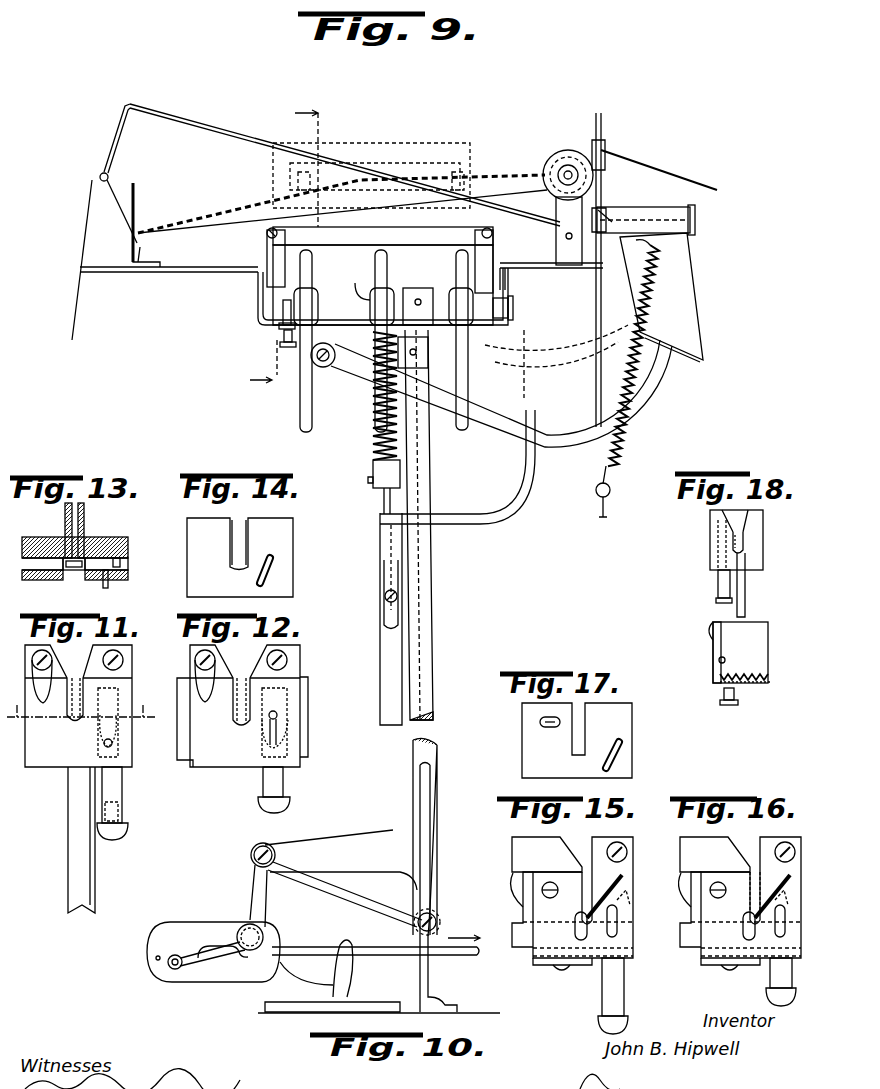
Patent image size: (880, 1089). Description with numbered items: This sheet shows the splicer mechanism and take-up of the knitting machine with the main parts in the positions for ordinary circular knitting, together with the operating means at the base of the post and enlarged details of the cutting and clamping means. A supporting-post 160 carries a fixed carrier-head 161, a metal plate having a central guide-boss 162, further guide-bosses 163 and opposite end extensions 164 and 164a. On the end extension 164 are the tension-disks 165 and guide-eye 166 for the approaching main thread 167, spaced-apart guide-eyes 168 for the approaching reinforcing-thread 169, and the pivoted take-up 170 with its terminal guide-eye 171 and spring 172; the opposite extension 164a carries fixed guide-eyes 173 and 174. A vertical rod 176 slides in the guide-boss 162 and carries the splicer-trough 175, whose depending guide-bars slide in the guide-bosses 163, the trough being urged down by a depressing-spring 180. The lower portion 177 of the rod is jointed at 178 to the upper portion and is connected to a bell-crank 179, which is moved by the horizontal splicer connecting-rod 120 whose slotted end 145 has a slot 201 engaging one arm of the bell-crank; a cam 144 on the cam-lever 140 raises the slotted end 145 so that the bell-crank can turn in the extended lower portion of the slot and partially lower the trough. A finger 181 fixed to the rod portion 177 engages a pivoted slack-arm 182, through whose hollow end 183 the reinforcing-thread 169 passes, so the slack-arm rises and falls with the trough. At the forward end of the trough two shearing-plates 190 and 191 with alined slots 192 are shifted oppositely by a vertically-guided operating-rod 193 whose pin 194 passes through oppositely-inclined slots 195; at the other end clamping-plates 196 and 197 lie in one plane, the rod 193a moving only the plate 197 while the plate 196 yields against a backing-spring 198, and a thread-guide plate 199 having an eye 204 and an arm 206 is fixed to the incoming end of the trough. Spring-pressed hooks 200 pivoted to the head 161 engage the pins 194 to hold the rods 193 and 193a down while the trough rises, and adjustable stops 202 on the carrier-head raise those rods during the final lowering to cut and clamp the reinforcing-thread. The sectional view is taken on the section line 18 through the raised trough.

In FIG. 9, the pivoted take-up 170 is at (213, 131).
In FIG. 9, the section line 18 is at (287, 248).
In FIG. 9, the terminal guide-eye 171 is at (104, 176).
In FIG. 9, the fixed guide-eye 173 is at (102, 260).
In FIG. 9, the fixed guide-eye 174 is at (93, 272).
In FIG. 9, the end extension 164a is at (165, 272).
In FIG. 18, the end extension 164a is at (755, 651).
In FIG. 9, the spring-pressed hooks 200 is at (266, 256).
In FIG. 18, the spring-pressed hooks 200 is at (713, 640).
In FIG. 9, the splicer-trough 175 is at (383, 238).
In FIG. 13, the splicer-trough 175 is at (91, 530).
In FIG. 18, the splicer-trough 175 is at (746, 530).
In FIG. 9, the vertical rod 176 is at (390, 290).
In FIG. 9, the guide-boss 162 is at (361, 288).
In FIG. 9, the guide-bosses 163 is at (312, 306).
In FIG. 9, the operating-rod 193 is at (283, 302).
In FIG. 11, the operating-rod 193 is at (122, 798).
In FIG. 12, the operating-rod 193 is at (283, 780).
In FIG. 13, the operating-rod 193 is at (103, 542).
In FIG. 18, the operating-rod 193 is at (718, 585).
In FIG. 9, the carrier-head 161 is at (262, 322).
In FIG. 18, the carrier-head 161 is at (768, 681).
In FIG. 9, the adjustable stops 202 is at (284, 336).
In FIG. 18, the adjustable stops 202 is at (724, 703).
In FIG. 9, the end extension 164 is at (551, 280).
In FIG. 9, the operating-rod 193a is at (513, 303).
In FIG. 15, the operating-rod 193a is at (615, 982).
In FIG. 16, the operating-rod 193a is at (788, 972).
In FIG. 9, the joint 178 is at (375, 488).
In FIG. 9, the depressing-spring 180 is at (375, 400).
In FIG. 9, the supporting-post 160 is at (430, 622).
In FIG. 10, the supporting-post 160 is at (437, 755).
In FIG. 9, the lower rod portion 177 is at (400, 676).
In FIG. 10, the lower rod portion 177 is at (418, 845).
In FIG. 9, the slack-arm 182 is at (645, 400).
In FIG. 9, the finger 181 is at (495, 505).
In FIG. 9, the tension-disks 165 is at (560, 150).
In FIG. 9, the guide-eye 166 is at (603, 145).
In FIG. 9, the main thread 167 is at (659, 169).
In FIG. 9, the spaced-apart guide-eyes 168 is at (605, 225).
In FIG. 9, the reinforcing-thread 169 is at (696, 232).
In FIG. 9, the hollow end 183 is at (686, 360).
In FIG. 9, the spring 172 is at (640, 290).
In FIG. 10, the bell-crank 179 is at (256, 888).
In FIG. 10, the slotted end 145 is at (213, 952).
In FIG. 10, the slot 201 is at (220, 945).
In FIG. 10, the splicer connecting-rod 120 is at (385, 952).
In FIG. 10, the cam 144 is at (333, 972).
In FIG. 10, the cam-lever 140 is at (264, 1005).
In FIG. 11, the shearing-plate 191 is at (82, 706).
In FIG. 12, the shearing-plate 191 is at (249, 706).
In FIG. 13, the shearing-plate 191 is at (128, 566).
In FIG. 14, the shearing-plate 191 is at (240, 557).
In FIG. 11, the alined slots 192 is at (77, 795).
In FIG. 13, the alined slots 192 is at (75, 570).
In FIG. 14, the alined slots 192 is at (240, 540).
In FIG. 11, the pin 194 is at (112, 743).
In FIG. 12, the pin 194 is at (277, 715).
In FIG. 13, the pin 194 is at (105, 589).
In FIG. 18, the pin 194 is at (722, 634).
In FIG. 12, the shearing-plate 190 is at (194, 722).
In FIG. 13, the shearing-plate 190 is at (20, 562).
In FIG. 14, the oppositely-inclined slots 195 is at (275, 559).
In FIG. 17, the clamping-plate 196 is at (577, 740).
In FIG. 15, the clamping-plate 196 is at (533, 878).
In FIG. 16, the clamping-plate 196 is at (701, 878).
In FIG. 17, the clamping-plate 197 is at (612, 740).
In FIG. 15, the clamping-plate 197 is at (582, 868).
In FIG. 16, the clamping-plate 197 is at (750, 868).
In FIG. 15, the thread-guide plate 199 is at (585, 917).
In FIG. 16, the backing-spring 198 is at (680, 895).
In FIG. 16, the eye 204 is at (743, 928).
In FIG. 16, the arm 206 is at (781, 906).